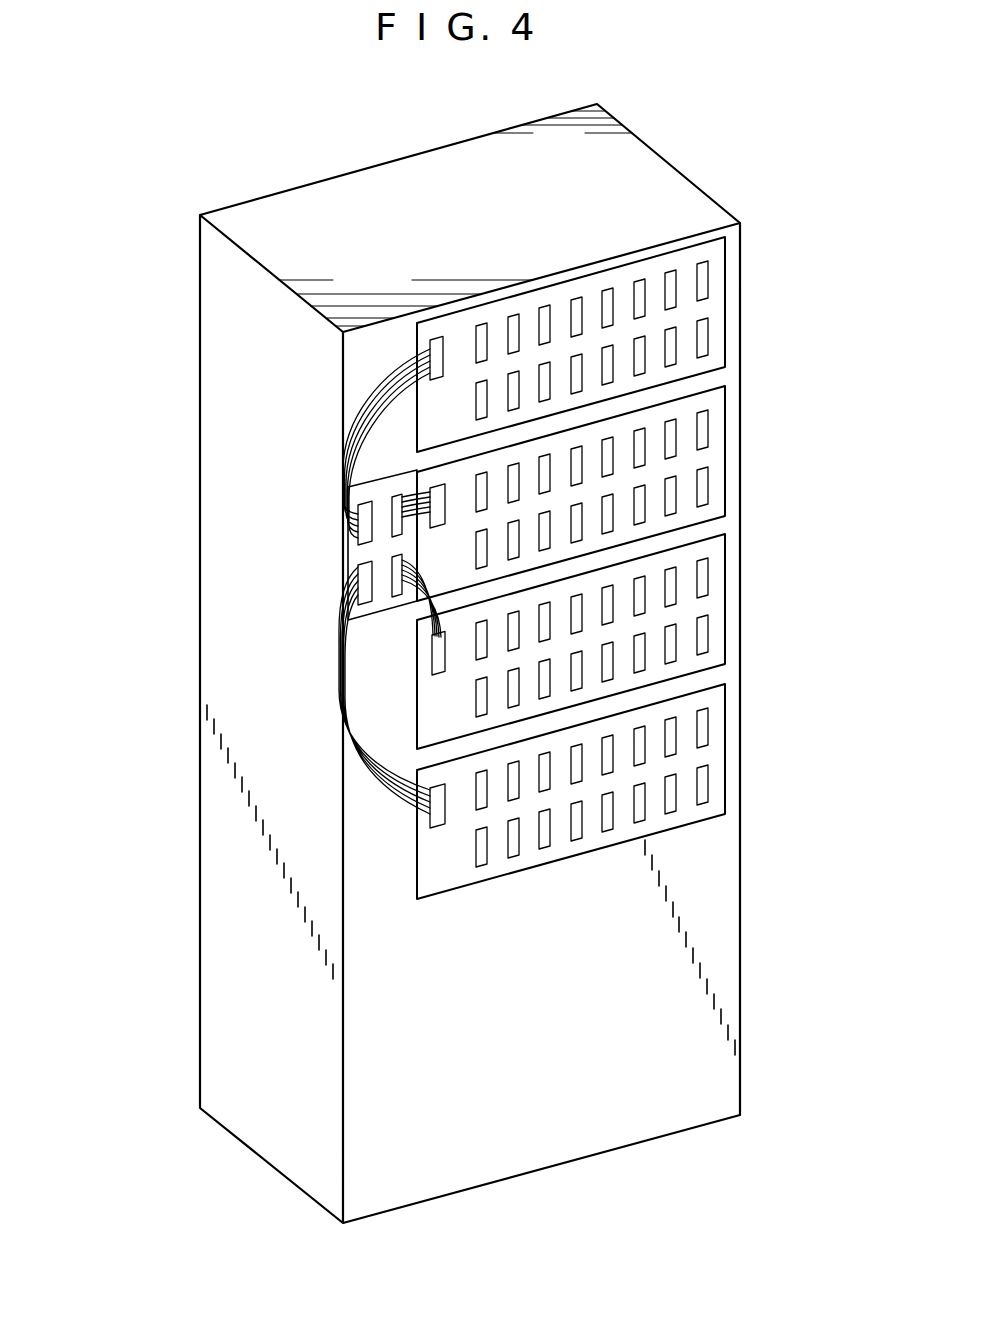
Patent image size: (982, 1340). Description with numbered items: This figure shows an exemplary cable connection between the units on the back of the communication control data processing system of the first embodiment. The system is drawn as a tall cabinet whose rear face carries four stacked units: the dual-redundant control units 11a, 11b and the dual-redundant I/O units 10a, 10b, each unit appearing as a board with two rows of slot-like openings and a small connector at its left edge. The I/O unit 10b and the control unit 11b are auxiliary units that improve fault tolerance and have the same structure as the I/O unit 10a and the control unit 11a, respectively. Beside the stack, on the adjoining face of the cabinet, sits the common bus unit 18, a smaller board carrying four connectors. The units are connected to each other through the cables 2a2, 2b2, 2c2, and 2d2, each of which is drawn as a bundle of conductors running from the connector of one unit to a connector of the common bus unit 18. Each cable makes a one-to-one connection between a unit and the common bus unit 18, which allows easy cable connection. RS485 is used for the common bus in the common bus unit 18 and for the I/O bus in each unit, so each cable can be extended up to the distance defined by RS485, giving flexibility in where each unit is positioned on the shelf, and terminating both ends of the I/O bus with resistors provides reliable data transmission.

The control unit 11a is at (727, 300).
The I/O unit 10a is at (727, 450).
The I/O unit 10b is at (727, 588).
The control unit 11b is at (727, 740).
The common bus unit 18 is at (350, 553).
The cable 2b2 is at (385, 402).
The cable 2a2 is at (390, 483).
The cable 2c2 is at (415, 612).
The cable 2d2 is at (372, 768).